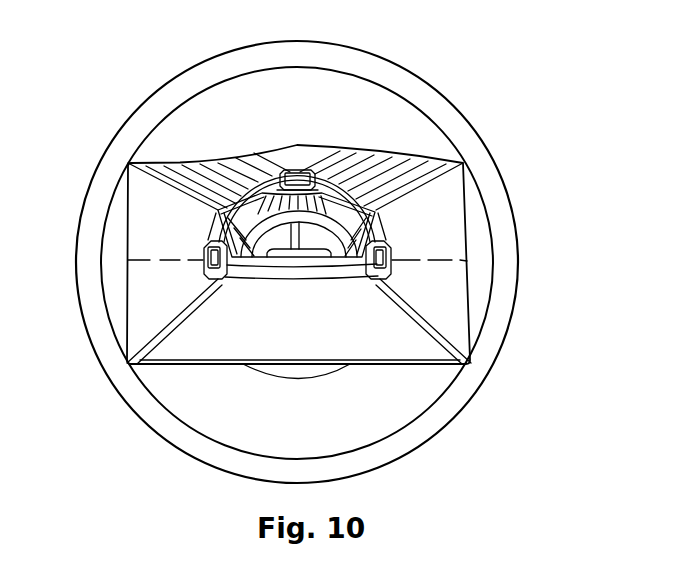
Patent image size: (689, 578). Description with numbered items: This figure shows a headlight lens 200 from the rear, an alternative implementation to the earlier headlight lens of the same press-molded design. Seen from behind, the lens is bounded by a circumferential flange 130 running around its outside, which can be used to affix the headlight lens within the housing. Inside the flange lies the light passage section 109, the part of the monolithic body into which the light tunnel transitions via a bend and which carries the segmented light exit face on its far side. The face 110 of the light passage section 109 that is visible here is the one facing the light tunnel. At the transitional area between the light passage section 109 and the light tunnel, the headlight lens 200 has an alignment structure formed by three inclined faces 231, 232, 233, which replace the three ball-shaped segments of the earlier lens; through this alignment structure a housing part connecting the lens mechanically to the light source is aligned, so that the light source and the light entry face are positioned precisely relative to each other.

The headlight lens 200 is at (493, 104).
The circumferential flange 130 is at (112, 163).
The light passage section 109 is at (150, 223).
The face of the light passage section 110 is at (250, 200).
The inclined face 231 is at (299, 171).
The inclined face 232 is at (205, 265).
The inclined face 233 is at (468, 262).